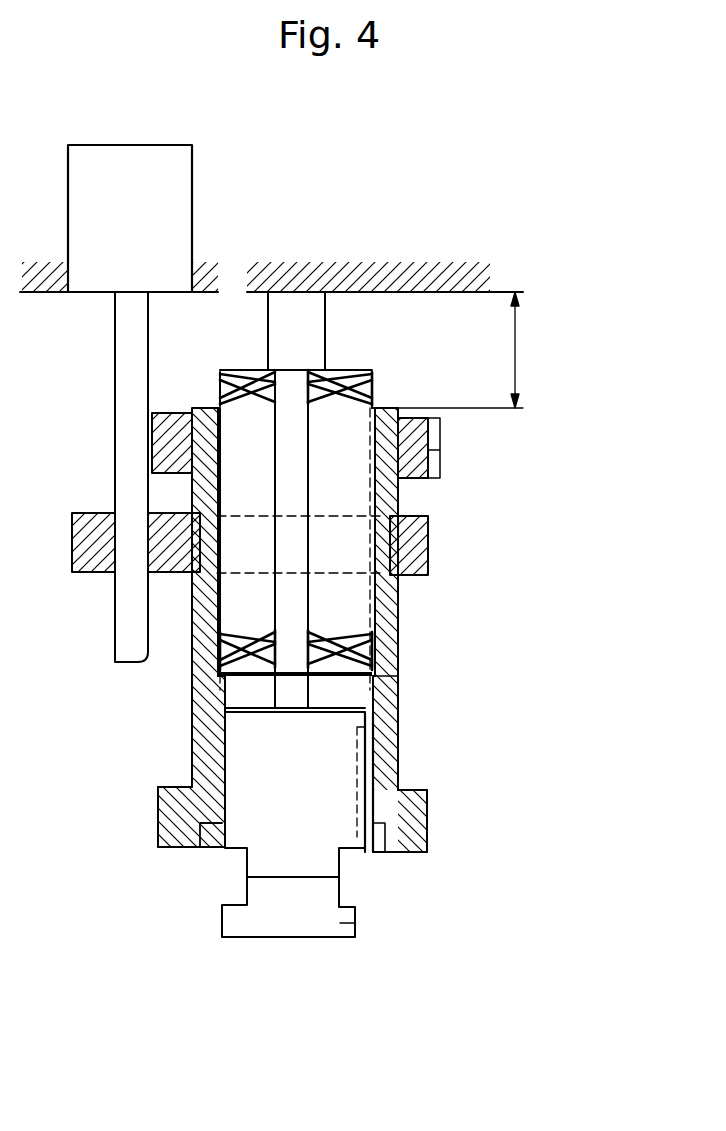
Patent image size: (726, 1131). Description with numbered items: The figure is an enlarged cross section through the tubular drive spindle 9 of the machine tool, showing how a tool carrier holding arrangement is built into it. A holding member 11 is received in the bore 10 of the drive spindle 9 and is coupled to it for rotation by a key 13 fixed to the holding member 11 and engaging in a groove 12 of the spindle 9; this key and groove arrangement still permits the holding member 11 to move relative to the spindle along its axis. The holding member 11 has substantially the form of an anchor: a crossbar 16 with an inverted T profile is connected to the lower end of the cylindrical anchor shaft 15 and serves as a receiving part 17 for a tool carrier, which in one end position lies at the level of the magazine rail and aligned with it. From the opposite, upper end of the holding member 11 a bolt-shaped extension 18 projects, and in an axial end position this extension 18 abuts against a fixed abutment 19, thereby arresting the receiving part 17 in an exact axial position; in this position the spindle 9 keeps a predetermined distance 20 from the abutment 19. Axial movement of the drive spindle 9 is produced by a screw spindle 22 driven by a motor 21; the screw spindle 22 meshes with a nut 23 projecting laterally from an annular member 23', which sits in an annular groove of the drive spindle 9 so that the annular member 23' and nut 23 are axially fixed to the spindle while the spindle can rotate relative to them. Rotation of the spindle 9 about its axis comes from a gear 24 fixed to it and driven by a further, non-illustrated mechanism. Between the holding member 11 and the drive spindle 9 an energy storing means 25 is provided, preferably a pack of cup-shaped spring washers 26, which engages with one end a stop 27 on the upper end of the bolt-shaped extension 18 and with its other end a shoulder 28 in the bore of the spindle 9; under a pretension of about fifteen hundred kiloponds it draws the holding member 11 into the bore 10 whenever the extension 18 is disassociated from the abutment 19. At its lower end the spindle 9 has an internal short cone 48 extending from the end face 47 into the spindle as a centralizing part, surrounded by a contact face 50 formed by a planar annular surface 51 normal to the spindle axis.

The drive spindle 9 is at (388, 605).
The bore 10 is at (230, 714).
The holding member 11 is at (320, 778).
The groove 12 is at (395, 729).
The key 13 is at (407, 853).
The anchor shaft 15 is at (377, 806).
The crossbar 16 is at (240, 922).
The receiving part 17 is at (340, 923).
The bolt-shaped extension 18 is at (300, 563).
The fixed abutment 19 is at (369, 295).
The predetermined distance 20 is at (515, 347).
The motor 21 is at (178, 190).
The screw spindle 22 is at (132, 362).
The nut 23 is at (102, 542).
The annular member 23' is at (463, 545).
The gear 24 is at (415, 455).
The energy storing means 25 is at (348, 368).
The pack of cup-shaped spring washers 26 is at (345, 633).
The stop 27 is at (247, 370).
The shoulder 28 is at (215, 692).
The end face 47 is at (157, 850).
The internal short cone 48 is at (212, 850).
The contact face 50 is at (372, 853).
The planar annular surface 51 is at (407, 855).